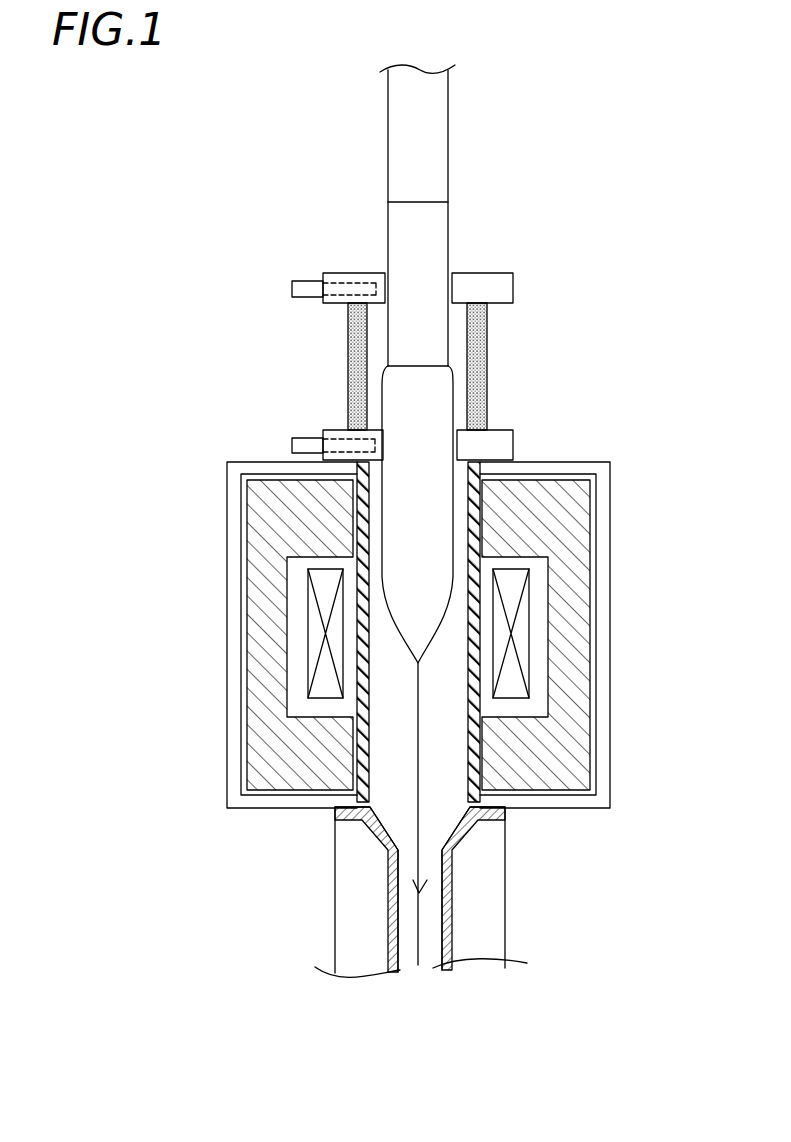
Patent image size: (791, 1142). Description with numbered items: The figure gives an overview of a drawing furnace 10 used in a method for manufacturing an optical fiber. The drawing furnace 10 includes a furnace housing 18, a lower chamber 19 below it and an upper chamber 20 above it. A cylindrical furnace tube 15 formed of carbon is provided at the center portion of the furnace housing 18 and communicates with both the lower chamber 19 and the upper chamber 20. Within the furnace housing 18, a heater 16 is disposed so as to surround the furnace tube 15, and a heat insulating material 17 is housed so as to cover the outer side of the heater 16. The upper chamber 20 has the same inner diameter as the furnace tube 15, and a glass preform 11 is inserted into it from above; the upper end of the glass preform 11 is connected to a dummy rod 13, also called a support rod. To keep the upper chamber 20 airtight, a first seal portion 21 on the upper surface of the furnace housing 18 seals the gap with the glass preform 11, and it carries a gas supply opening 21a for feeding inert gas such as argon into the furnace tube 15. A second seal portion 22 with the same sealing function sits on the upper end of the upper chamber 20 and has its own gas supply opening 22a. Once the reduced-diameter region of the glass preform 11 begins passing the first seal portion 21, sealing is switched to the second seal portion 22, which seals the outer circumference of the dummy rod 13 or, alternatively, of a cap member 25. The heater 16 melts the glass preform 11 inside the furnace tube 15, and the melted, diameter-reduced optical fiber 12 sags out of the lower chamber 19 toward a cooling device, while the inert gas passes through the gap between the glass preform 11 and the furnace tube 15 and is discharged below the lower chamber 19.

The drawing furnace 10 is at (199, 388).
The glass preform 11 is at (438, 548).
The optical fiber 12 is at (421, 835).
The dummy rod 13 is at (452, 118).
The furnace tube 15 is at (350, 515).
The heater 16 is at (520, 622).
The heat insulating material 17 is at (573, 658).
The furnace housing 18 is at (603, 698).
The lower chamber 19 is at (388, 918).
The upper chamber 20 is at (348, 368).
The first seal portion 21 is at (513, 443).
The gas supply opening 21a is at (307, 438).
The second seal portion 22 is at (513, 289).
The gas supply opening 22a is at (292, 289).
The cap member 25 is at (396, 270).